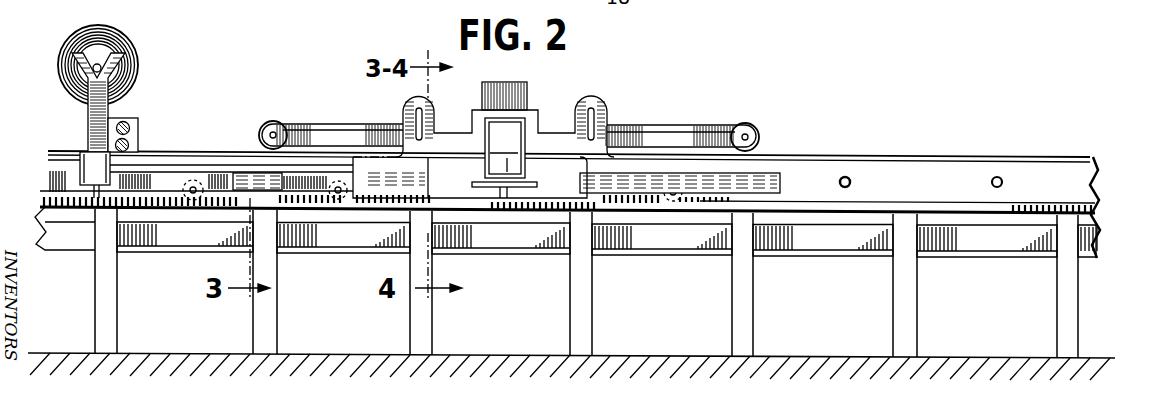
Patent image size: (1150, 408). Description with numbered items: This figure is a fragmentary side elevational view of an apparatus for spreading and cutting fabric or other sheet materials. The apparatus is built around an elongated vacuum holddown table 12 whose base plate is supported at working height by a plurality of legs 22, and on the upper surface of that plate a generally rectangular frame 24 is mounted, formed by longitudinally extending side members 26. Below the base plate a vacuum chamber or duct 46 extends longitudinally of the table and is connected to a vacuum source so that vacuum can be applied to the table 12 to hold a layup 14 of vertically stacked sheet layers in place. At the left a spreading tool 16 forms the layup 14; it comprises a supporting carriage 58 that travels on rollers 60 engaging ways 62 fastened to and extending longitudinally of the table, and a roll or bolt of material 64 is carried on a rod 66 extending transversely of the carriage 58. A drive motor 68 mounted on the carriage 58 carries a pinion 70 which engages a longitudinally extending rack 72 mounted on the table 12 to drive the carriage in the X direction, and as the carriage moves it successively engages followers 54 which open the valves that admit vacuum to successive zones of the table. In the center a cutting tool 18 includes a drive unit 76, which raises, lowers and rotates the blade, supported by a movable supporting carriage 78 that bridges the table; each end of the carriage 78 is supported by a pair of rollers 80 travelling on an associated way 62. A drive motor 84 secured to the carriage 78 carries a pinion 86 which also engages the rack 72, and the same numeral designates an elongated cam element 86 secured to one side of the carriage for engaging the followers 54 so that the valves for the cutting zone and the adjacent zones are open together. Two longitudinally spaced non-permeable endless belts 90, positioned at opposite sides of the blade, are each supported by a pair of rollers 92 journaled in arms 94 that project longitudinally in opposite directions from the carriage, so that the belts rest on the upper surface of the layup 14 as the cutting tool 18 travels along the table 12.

The vacuum holddown table 12 is at (1108, 201).
The layup 14 is at (850, 155).
The spreading tool 16 is at (62, 34).
The cutting tool 18 is at (551, 96).
The legs 22 is at (105, 328).
The frame 24 is at (1034, 180).
The side members 26 is at (930, 177).
The vacuum chamber or duct 46 is at (990, 243).
The followers 54 is at (998, 176).
The supporting carriage 58 is at (88, 115).
The rollers 60 is at (196, 200).
The ways 62 is at (140, 217).
The roll or bolt of material 64 is at (122, 37).
The rod 66 is at (92, 67).
The drive motor 68 is at (87, 162).
The pinion 70 is at (90, 198).
The rack 72 is at (550, 210).
The drive unit 76 is at (513, 92).
The movable supporting carriage 78 is at (455, 143).
The rollers 80 is at (341, 200).
The drive motor 84 is at (505, 148).
The pinion 86 is at (767, 183).
The endless belts 90 is at (638, 123).
The rollers 92 is at (752, 128).
The arms 94 is at (685, 135).